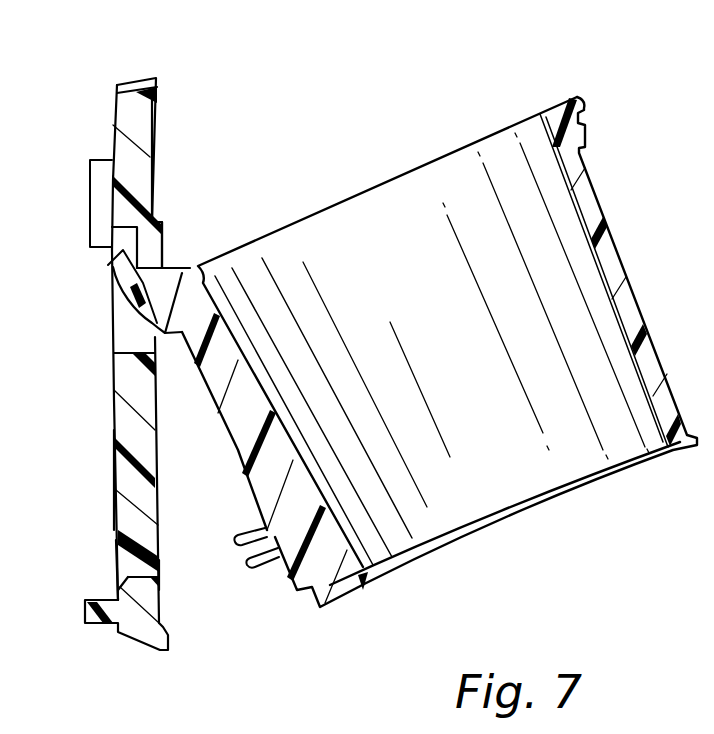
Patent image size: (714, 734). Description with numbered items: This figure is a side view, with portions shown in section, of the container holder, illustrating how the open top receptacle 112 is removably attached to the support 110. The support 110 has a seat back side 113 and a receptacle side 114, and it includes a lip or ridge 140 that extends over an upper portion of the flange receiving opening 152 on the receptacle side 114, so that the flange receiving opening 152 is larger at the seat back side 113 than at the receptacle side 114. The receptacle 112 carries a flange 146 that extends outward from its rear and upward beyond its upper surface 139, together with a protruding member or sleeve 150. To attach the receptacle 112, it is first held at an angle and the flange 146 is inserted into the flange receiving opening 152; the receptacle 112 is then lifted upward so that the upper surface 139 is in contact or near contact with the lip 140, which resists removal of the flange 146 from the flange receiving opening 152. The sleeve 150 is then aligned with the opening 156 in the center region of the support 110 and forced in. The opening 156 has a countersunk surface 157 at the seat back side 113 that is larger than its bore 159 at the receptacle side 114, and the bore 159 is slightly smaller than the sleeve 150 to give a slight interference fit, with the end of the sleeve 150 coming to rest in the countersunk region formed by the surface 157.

The support 110 is at (147, 70).
The open top receptacle 112 is at (574, 90).
The seat back side 113 is at (116, 108).
The receptacle side 114 is at (157, 117).
The upper surface 139 is at (175, 265).
The lip or ridge 140 is at (163, 225).
The first flange 146 is at (108, 265).
The protruding member or sleeve 150 is at (256, 586).
The first flange receiving opening 152 is at (112, 298).
The opening 156 is at (118, 563).
The countersunk surface 157 is at (122, 540).
The bore 159 is at (160, 558).